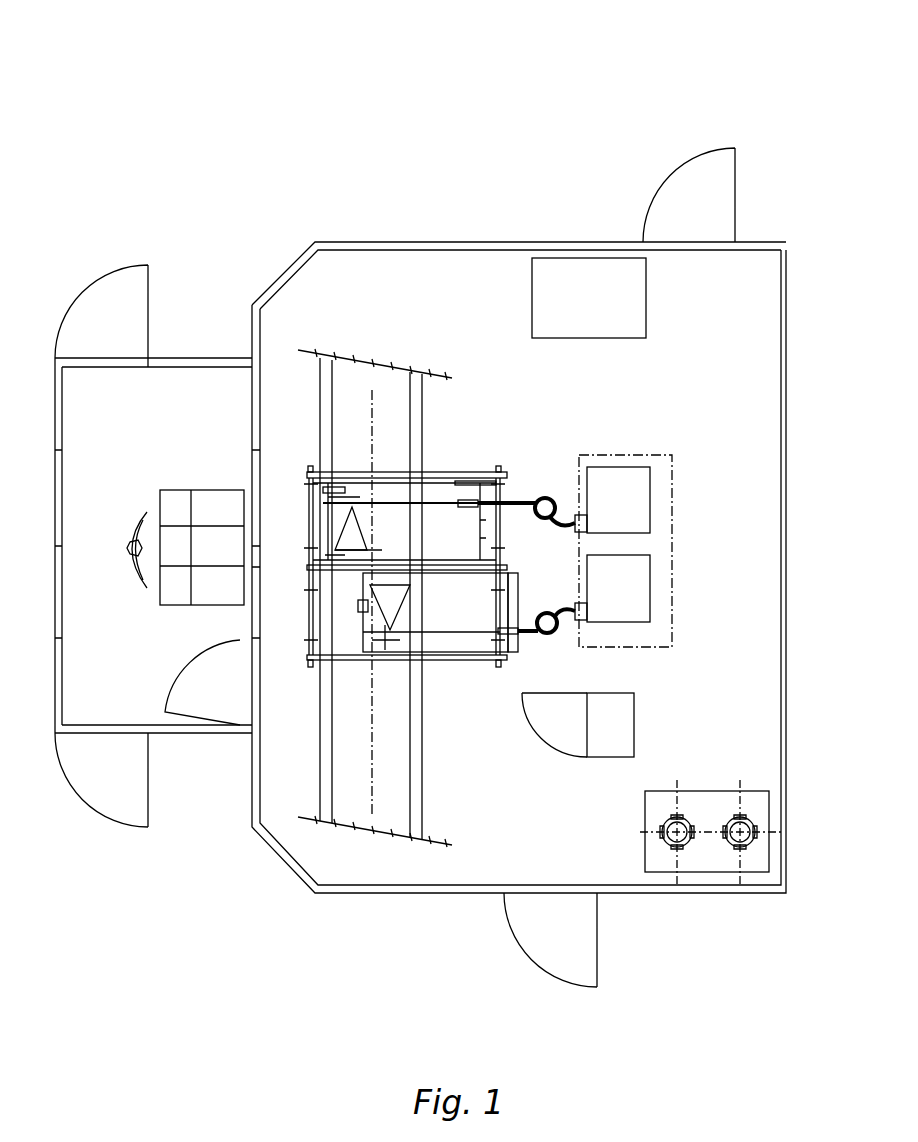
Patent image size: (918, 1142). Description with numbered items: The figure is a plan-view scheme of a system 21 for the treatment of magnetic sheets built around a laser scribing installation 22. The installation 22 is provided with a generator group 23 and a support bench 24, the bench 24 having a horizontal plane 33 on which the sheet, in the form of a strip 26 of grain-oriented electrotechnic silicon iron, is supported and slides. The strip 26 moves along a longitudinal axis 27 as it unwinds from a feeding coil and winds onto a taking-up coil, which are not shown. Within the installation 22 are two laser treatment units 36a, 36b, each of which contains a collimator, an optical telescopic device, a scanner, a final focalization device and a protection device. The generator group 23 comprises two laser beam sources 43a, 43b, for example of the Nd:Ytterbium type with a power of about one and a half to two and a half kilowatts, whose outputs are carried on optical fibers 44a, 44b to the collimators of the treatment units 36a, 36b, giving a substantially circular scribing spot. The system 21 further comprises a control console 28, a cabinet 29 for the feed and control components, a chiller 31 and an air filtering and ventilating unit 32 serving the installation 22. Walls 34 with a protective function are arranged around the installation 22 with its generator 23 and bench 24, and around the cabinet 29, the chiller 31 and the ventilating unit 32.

The system for the treatment of magnetic sheets 21 is at (147, 92).
The laser scribing installation 22 is at (667, 392).
The generator group 23 is at (710, 474).
The support bench 24 is at (307, 468).
The strip 26 is at (393, 730).
The longitudinal axis 27 is at (370, 810).
The control console 28 is at (177, 510).
The cabinet 29 is at (623, 731).
The chiller 31 is at (652, 805).
The air filtering and ventilating unit 32 is at (548, 291).
The horizontal plane 33 is at (422, 425).
The walls 34 is at (348, 244).
The laser treatment unit 36a is at (455, 675).
The laser treatment unit 36b is at (469, 462).
The laser beam source 43a is at (643, 603).
The laser beam source 43b is at (647, 495).
The optical fiber 44a is at (563, 612).
The optical fiber 44b is at (520, 503).